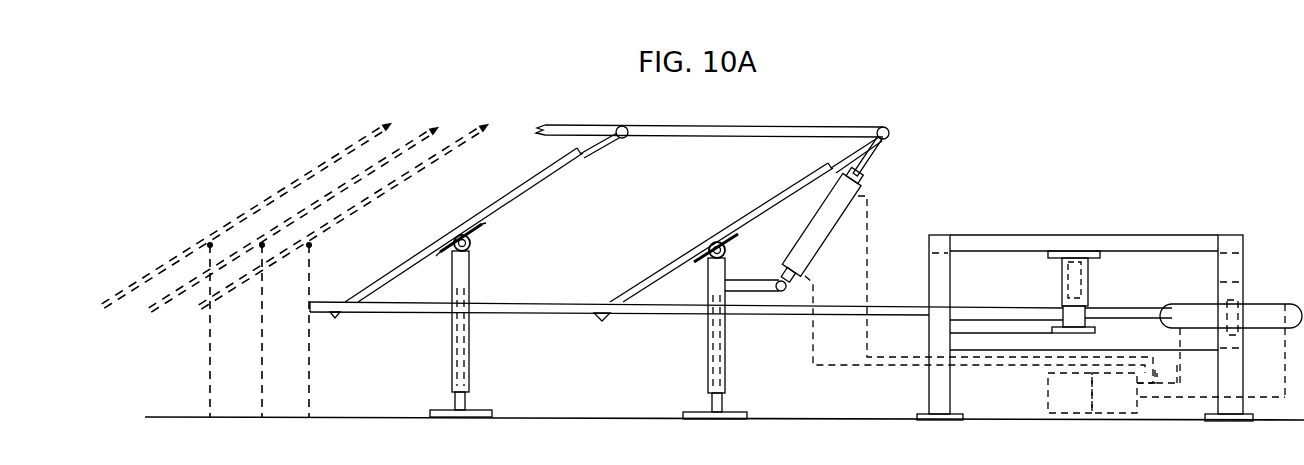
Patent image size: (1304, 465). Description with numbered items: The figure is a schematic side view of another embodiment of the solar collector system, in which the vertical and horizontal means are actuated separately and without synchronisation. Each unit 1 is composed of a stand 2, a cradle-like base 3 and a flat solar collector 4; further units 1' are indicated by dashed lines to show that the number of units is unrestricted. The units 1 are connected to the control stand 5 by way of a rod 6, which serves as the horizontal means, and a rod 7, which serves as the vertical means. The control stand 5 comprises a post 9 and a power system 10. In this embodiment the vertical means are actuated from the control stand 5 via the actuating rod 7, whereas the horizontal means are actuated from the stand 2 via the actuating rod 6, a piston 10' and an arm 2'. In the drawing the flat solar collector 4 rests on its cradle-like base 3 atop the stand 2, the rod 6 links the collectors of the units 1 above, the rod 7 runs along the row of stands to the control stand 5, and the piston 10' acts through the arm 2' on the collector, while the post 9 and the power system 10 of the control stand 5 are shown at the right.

The unit 1 is at (475, 321).
The further units 1' is at (295, 270).
The stand 2 is at (449, 428).
The arm 2' is at (760, 326).
The cradle-like base 3 is at (483, 228).
The flat solar collector 4 is at (674, 262).
The control stand 5 is at (933, 378).
The rod 6 is at (888, 129).
The rod 7 is at (752, 317).
The post 9 is at (1075, 404).
The power system 10 is at (1197, 381).
The piston 10' is at (964, 260).